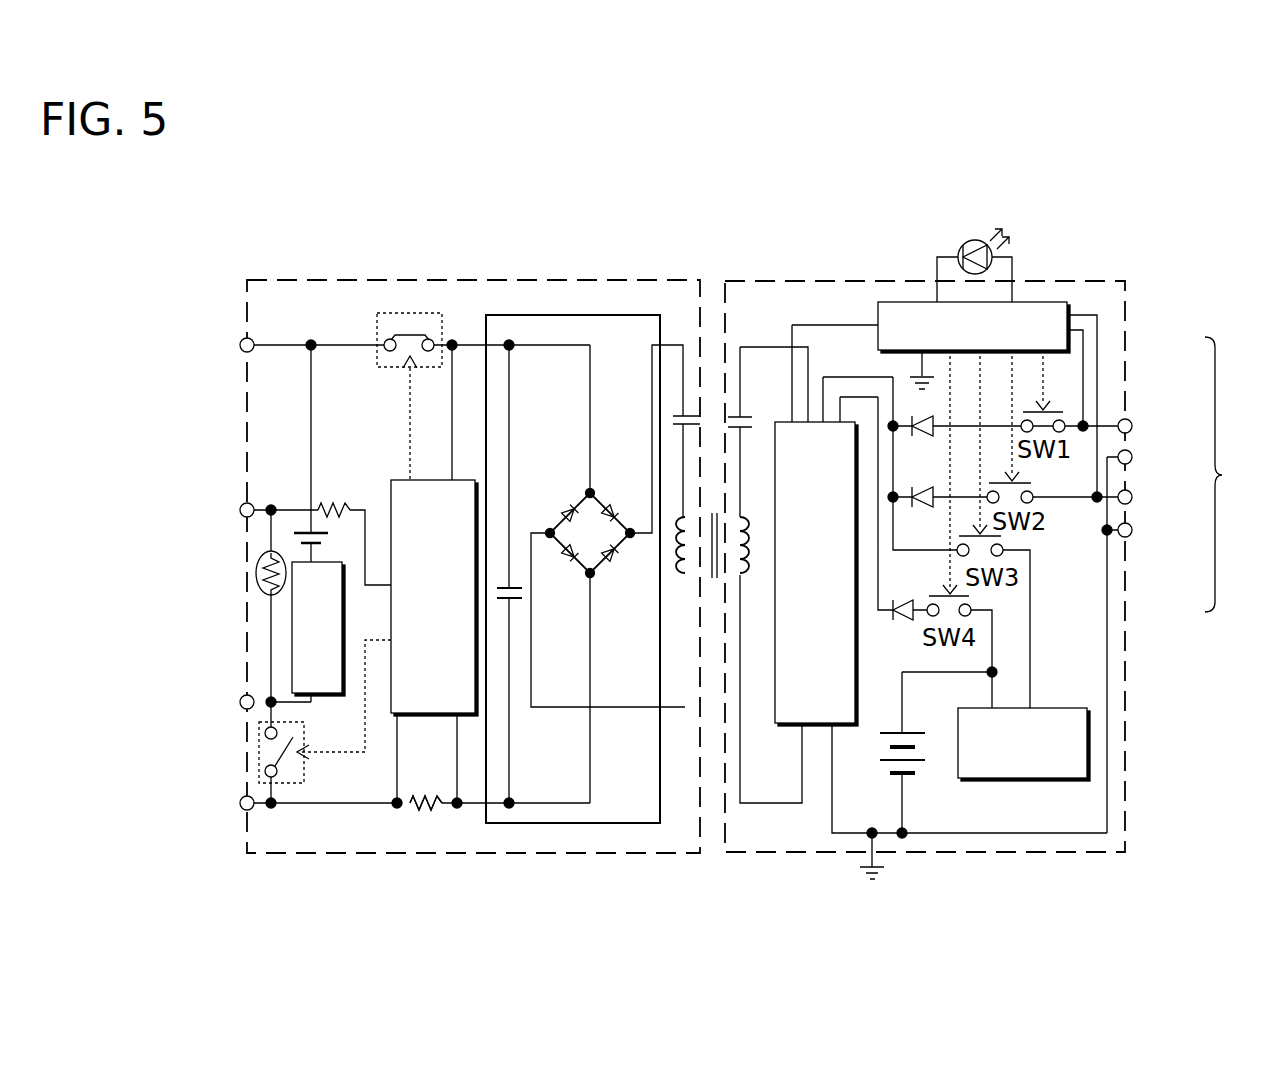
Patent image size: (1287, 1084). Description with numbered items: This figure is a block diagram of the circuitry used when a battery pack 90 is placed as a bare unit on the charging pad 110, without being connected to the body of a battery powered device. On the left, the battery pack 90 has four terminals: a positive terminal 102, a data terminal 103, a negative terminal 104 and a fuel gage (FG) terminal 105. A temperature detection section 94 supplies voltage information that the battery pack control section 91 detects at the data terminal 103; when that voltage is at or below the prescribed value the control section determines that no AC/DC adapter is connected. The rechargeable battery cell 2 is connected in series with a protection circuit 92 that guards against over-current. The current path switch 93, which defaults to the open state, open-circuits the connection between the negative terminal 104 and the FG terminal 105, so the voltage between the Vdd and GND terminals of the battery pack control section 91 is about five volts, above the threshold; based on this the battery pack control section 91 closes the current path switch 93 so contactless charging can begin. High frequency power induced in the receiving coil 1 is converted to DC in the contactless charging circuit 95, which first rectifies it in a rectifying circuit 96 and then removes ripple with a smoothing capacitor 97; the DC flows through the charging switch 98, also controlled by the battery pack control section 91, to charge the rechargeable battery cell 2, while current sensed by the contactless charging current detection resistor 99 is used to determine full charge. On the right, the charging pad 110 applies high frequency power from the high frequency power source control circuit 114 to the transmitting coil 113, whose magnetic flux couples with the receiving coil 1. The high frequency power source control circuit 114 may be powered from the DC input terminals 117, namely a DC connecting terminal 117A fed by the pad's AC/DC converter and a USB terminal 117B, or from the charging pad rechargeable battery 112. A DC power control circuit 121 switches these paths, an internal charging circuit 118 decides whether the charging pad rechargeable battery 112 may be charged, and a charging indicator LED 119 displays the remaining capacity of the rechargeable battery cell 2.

The receiving coil 1 is at (676, 520).
The rechargeable battery cell 2 is at (322, 528).
The battery pack 90 is at (397, 282).
The battery pack control section 91 is at (418, 716).
The protection circuit 92 is at (341, 672).
The current path switch 93 is at (307, 762).
The temperature detection section 94 is at (280, 553).
The contactless charging circuit 95 is at (550, 315).
The rectifying circuit 96 is at (569, 485).
The smoothing capacitor 97 is at (513, 585).
The charging switch 98 is at (410, 313).
The contactless charging current detection resistor 99 is at (423, 808).
The positive terminal 102 is at (240, 343).
The data terminal 103 is at (240, 508).
The negative terminal 104 is at (240, 700).
The fuel gage (FG) terminal 105 is at (240, 801).
The charging pad 110 is at (862, 281).
The charging pad rechargeable battery 112 is at (918, 762).
The transmitting coil 113 is at (748, 572).
The high frequency power source control circuit 114 is at (782, 420).
The DC input terminals 117 is at (1246, 474).
The DC connecting terminal 117A is at (1134, 436).
The USB terminal 117B is at (1134, 514).
The internal charging circuit 118 is at (1030, 780).
The charging indicator LED 119 is at (962, 226).
The DC power control circuit 121 is at (1040, 300).